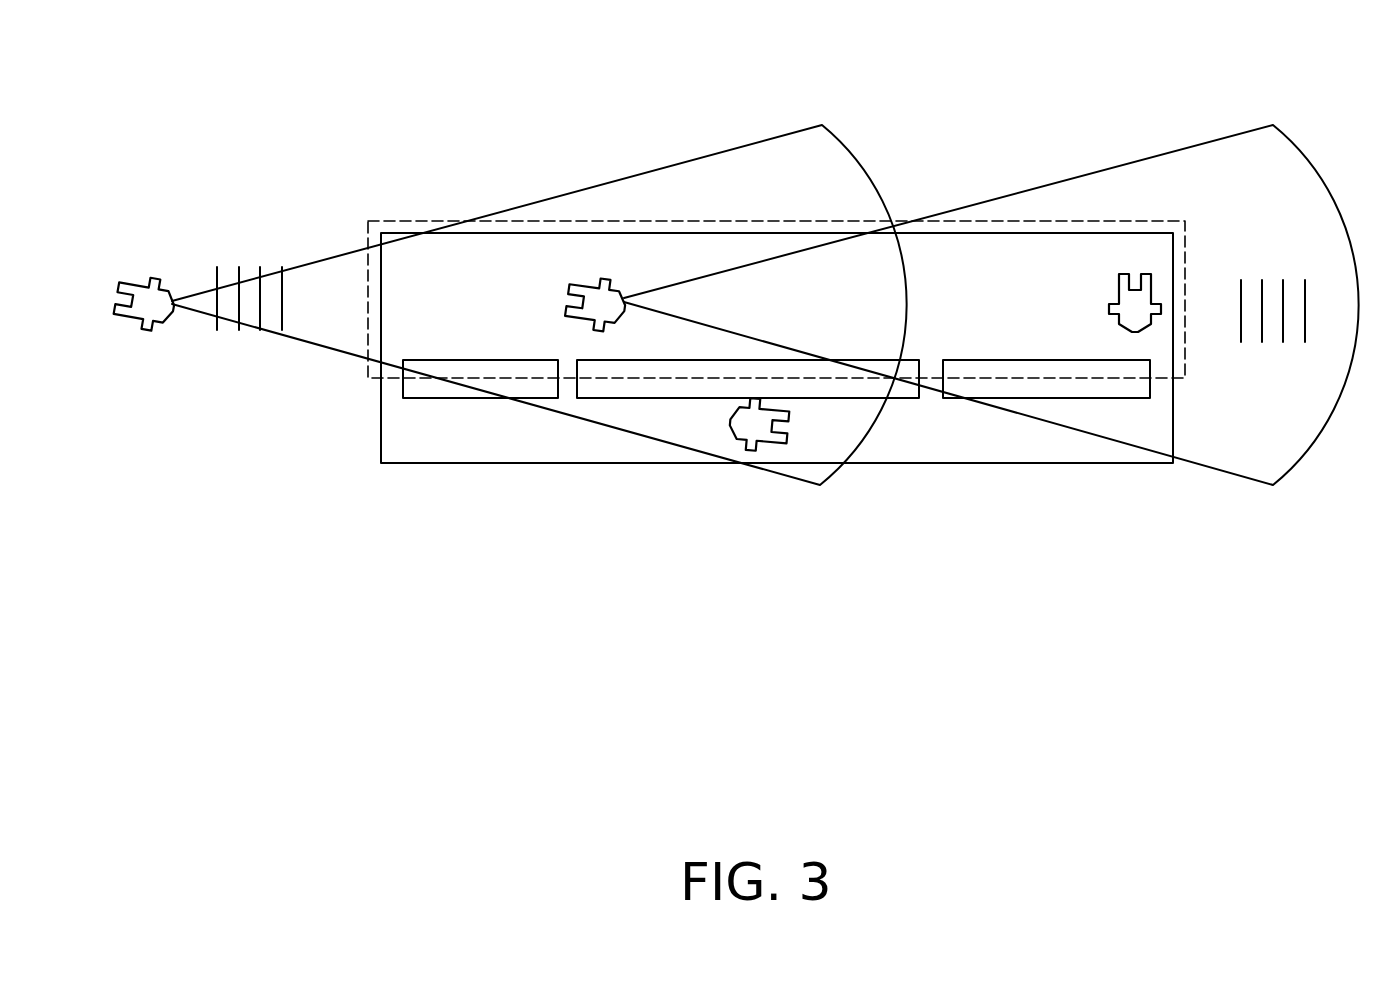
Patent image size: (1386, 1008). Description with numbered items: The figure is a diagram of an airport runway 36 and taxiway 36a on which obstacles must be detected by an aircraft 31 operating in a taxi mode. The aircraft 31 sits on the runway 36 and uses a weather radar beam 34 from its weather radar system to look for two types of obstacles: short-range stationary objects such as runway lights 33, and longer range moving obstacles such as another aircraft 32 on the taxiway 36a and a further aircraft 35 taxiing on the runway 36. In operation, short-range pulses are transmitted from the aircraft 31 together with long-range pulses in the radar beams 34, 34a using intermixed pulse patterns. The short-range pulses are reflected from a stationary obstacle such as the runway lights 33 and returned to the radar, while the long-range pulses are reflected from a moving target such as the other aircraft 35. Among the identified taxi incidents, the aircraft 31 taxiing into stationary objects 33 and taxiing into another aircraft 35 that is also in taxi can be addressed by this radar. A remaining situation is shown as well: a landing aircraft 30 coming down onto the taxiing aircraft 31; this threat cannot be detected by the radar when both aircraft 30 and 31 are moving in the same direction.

The aircraft 30 is at (148, 282).
The aircraft 31 is at (598, 278).
The other aircraft 32 is at (737, 423).
The runway lights 33 is at (249, 345).
The weather radar beam 34 is at (1113, 165).
The radar beam 34a is at (845, 157).
The aircraft 35 is at (1132, 312).
The runway 36 is at (404, 220).
The taxiway 36a is at (380, 448).